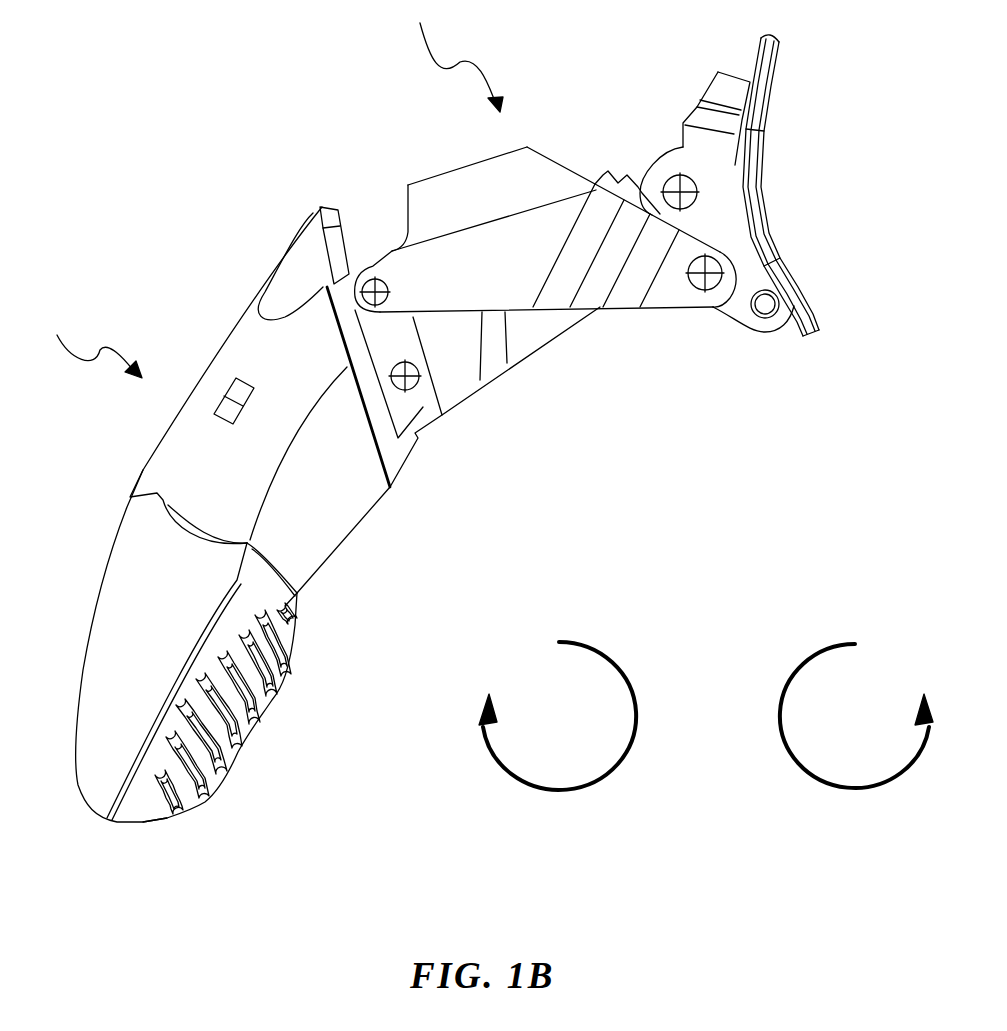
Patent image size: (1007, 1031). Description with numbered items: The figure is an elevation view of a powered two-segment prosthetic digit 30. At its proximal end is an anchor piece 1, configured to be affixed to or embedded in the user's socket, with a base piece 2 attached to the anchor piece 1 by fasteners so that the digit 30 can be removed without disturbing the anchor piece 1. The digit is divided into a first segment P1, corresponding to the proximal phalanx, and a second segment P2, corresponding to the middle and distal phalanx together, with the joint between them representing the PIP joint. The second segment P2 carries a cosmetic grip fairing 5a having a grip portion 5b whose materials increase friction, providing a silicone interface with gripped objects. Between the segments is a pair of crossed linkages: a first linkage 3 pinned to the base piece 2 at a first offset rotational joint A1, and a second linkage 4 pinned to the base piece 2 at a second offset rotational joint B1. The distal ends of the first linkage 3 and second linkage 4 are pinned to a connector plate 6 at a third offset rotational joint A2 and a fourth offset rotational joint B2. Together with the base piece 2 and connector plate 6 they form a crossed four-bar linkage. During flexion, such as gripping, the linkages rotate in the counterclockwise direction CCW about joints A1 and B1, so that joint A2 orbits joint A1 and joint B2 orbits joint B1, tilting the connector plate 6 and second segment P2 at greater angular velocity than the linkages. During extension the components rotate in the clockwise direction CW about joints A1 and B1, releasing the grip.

The prosthetic digit 30 is at (228, 100).
The anchor piece 1 is at (773, 52).
The base piece 2 is at (729, 88).
The first linkage 3 is at (428, 188).
The second linkage 4 is at (535, 330).
The grip fairing 5a is at (247, 343).
The grip portion 5b is at (258, 705).
The connector plate 6 is at (317, 242).
The first offset rotational joint A1 is at (713, 286).
The third offset rotational joint A2 is at (377, 279).
The second offset rotational joint B1 is at (673, 180).
The fourth offset rotational joint B2 is at (410, 380).
The first segment P1 is at (456, 56).
The second segment P2 is at (90, 344).
The clockwise direction CW is at (636, 700).
The counterclockwise direction CCW is at (793, 677).